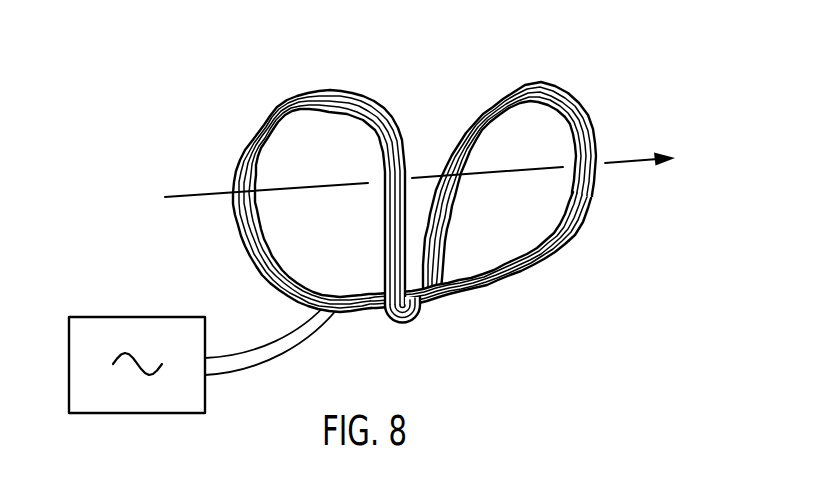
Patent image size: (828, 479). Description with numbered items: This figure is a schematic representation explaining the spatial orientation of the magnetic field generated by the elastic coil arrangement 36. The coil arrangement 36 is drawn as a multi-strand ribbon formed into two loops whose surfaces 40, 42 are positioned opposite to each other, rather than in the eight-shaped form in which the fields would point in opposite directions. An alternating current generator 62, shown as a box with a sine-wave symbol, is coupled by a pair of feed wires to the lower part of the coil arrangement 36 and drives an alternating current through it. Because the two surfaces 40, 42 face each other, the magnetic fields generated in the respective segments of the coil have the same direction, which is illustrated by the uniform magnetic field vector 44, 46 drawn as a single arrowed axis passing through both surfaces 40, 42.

The coil arrangement 36 is at (390, 208).
The first surface 40 is at (326, 123).
The second surface 42 is at (543, 123).
The magnetic field vector 44 is at (420, 152).
The magnetic field vector 46 is at (422, 177).
The alternating current generator 62 is at (132, 315).